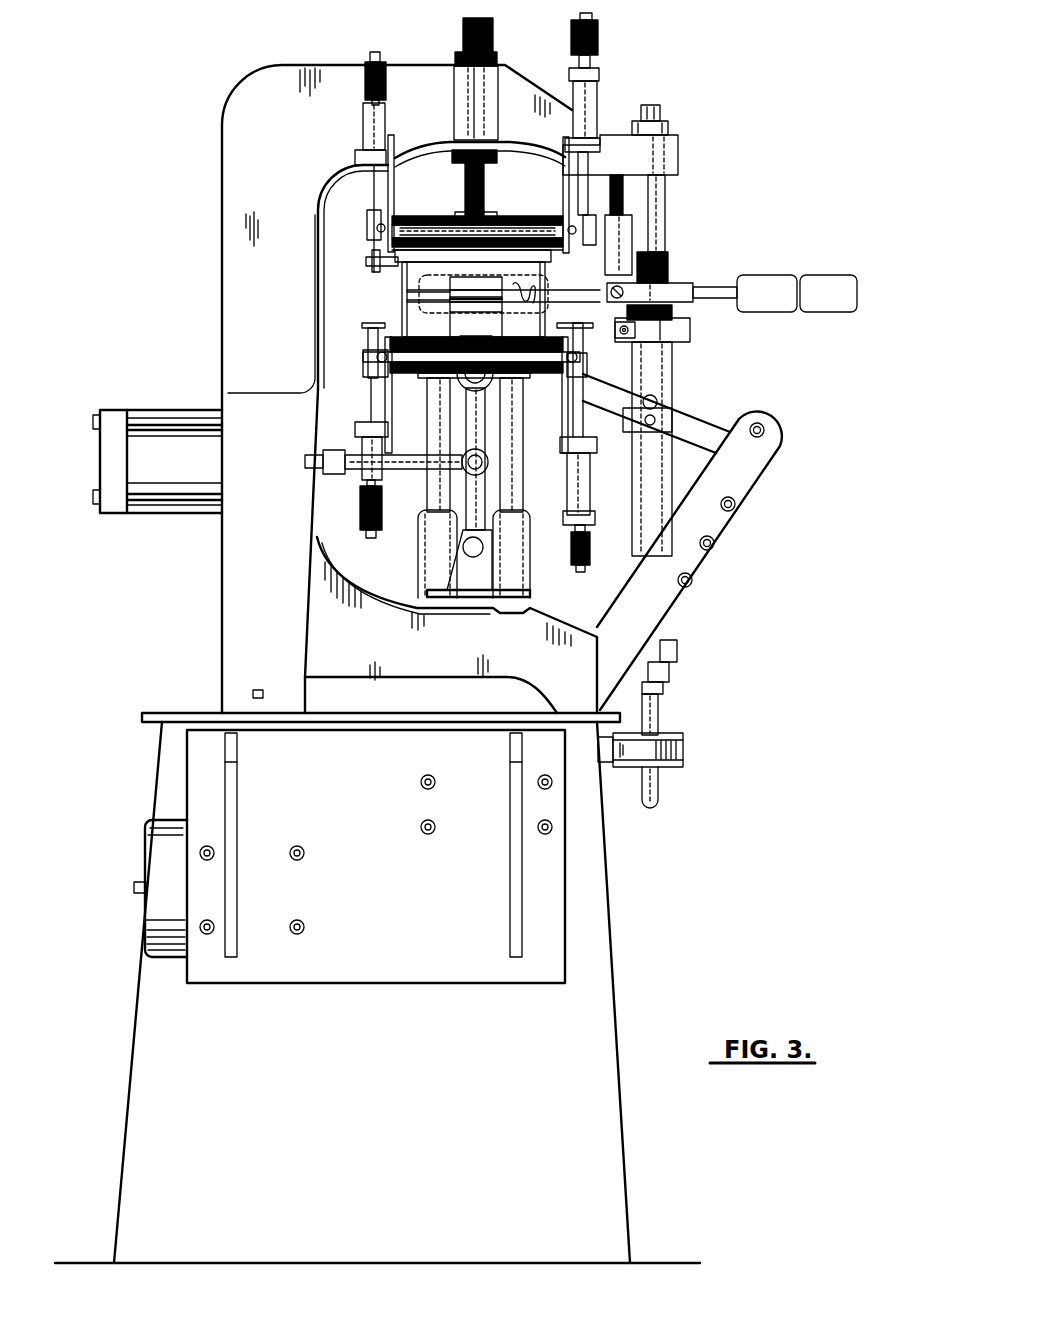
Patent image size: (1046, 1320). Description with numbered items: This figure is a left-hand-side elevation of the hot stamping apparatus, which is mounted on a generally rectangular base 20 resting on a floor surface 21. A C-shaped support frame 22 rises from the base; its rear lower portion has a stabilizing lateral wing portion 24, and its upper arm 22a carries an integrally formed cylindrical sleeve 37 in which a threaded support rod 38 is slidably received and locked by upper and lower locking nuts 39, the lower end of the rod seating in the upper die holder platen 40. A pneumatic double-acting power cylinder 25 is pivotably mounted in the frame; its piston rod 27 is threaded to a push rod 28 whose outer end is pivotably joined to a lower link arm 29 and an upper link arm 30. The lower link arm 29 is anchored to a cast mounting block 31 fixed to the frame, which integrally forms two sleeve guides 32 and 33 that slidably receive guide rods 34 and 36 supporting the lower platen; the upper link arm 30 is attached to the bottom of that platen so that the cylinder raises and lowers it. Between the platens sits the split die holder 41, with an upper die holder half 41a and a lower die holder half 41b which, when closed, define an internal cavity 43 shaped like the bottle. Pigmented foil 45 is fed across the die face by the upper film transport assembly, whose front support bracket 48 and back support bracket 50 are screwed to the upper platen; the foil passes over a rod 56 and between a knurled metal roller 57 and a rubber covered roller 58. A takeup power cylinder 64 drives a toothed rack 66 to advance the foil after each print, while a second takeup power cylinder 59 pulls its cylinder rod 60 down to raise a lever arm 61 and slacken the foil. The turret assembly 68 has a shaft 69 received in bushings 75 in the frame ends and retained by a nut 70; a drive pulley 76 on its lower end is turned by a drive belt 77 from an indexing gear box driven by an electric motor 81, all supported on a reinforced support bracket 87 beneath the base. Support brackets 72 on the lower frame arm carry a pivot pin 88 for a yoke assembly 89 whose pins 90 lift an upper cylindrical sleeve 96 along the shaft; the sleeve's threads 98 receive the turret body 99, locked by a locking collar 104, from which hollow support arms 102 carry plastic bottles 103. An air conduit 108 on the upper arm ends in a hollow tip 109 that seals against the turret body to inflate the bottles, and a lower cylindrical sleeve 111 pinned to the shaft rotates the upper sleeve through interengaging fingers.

The base 20 is at (597, 975).
The floor surface 21 is at (653, 1263).
The support frame 22 is at (205, 147).
The upper arm of the support frame 22a is at (347, 74).
The lateral wing portion 24 is at (235, 610).
The power cylinder 25 is at (165, 395).
The piston rod 27 is at (325, 450).
The push rod 28 is at (415, 460).
The lower link arm 29 is at (487, 490).
The upper link arm 30 is at (477, 400).
The mounting block 31 is at (457, 577).
The sleeve guide 32 is at (508, 567).
The sleeve guide 33 is at (433, 545).
The guide rod 34 is at (508, 457).
The guide rod 36 is at (433, 417).
The cylindrical sleeve 37 is at (458, 97).
The threaded support rod 38 is at (463, 30).
The locking nut 39 is at (497, 58).
The upper die holder platen 40 is at (453, 215).
The split die holder 41 is at (390, 298).
The upper die holder half 41a is at (392, 279).
The lower die holder half 41b is at (417, 320).
The cavity 43 is at (512, 290).
The pigmented foil 45 is at (476, 310).
The front support bracket 48 is at (548, 163).
The back support bracket 50 is at (395, 167).
The rod 56 is at (380, 262).
The knurled metal roller 57 is at (512, 232).
The rubber covered roller 58 is at (518, 225).
The takeup power cylinder 59 is at (363, 123).
The cylinder rod 60 is at (372, 188).
The lever arm 61 is at (370, 235).
The takeup power cylinder 64 is at (585, 97).
The toothed rack 66 is at (588, 190).
The turret assembly 68 is at (698, 270).
The shaft 69 is at (650, 210).
The nut 70 is at (665, 125).
The support bracket 72 is at (662, 608).
The bushing 75 is at (659, 710).
The drive pulley 76 is at (670, 765).
The drive belt 77 is at (683, 750).
The electric motor 81 is at (163, 902).
The reinforced support bracket 87 is at (373, 970).
The pivot pin 88 is at (762, 425).
The yoke assembly 89 is at (718, 415).
The pin 90 is at (662, 403).
The upper cylindrical sleeve 96 is at (650, 368).
The threads 98 is at (673, 258).
The turret body 99 is at (677, 310).
The support arm 102 is at (727, 283).
The plastic bottle 103 is at (815, 292).
The locking collar 104 is at (652, 335).
The air conduit 108 is at (625, 187).
The hollow tip 109 is at (618, 238).
The lower cylindrical sleeve 111 is at (652, 458).